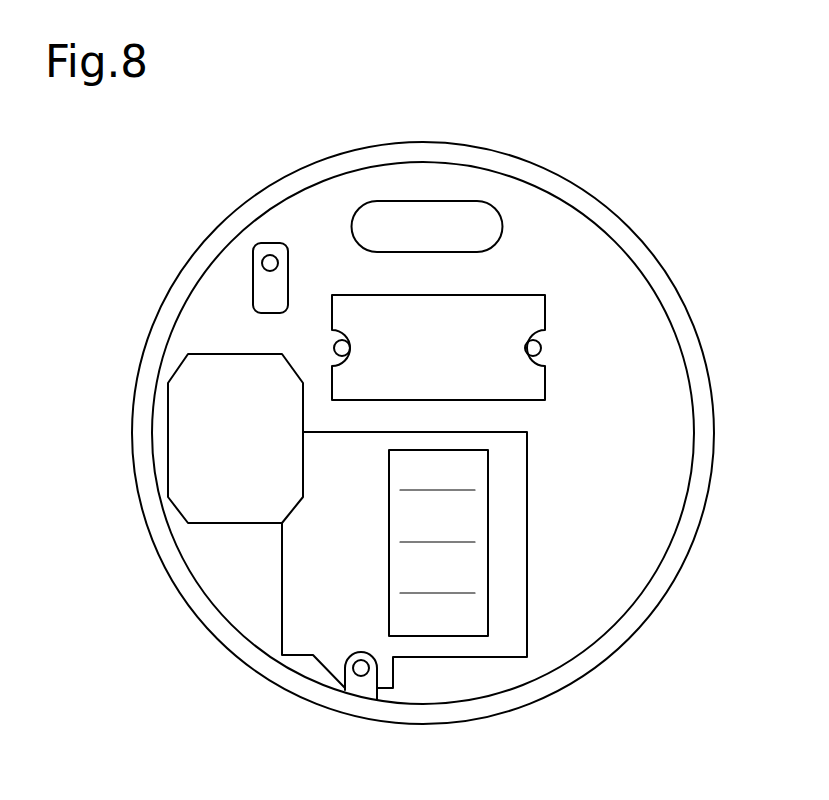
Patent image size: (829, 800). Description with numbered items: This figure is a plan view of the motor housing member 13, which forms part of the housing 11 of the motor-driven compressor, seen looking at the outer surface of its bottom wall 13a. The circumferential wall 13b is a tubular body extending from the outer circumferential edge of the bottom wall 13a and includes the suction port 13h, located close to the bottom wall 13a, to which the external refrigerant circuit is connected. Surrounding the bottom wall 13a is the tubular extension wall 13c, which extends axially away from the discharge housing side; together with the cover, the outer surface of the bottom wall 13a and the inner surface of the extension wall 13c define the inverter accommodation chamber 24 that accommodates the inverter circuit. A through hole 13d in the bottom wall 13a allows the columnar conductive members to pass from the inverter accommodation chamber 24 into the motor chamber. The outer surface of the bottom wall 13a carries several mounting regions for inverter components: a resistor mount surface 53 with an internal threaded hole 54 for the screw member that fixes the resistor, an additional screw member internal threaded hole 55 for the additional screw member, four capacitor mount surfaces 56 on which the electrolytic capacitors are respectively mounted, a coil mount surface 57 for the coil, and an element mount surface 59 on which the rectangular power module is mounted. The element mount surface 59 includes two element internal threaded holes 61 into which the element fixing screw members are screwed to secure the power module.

The housing 11 is at (285, 172).
The motor housing member 13 is at (492, 147).
The bottom wall 13a is at (328, 203).
The circumferential wall 13b is at (243, 203).
The extension wall 13c is at (613, 215).
The through hole 13d is at (500, 234).
The suction port 13h is at (140, 378).
The inverter accommodation chamber 24 is at (427, 214).
The resistor mount surface 53 is at (262, 290).
The internal threaded hole 54 is at (277, 264).
The additional screw member internal threaded hole 55 is at (358, 660).
The capacitor mount surfaces 56 is at (467, 468).
The coil mount surface 57 is at (170, 468).
The element mount surface 59 is at (462, 315).
The element internal threaded holes 61 is at (348, 354).